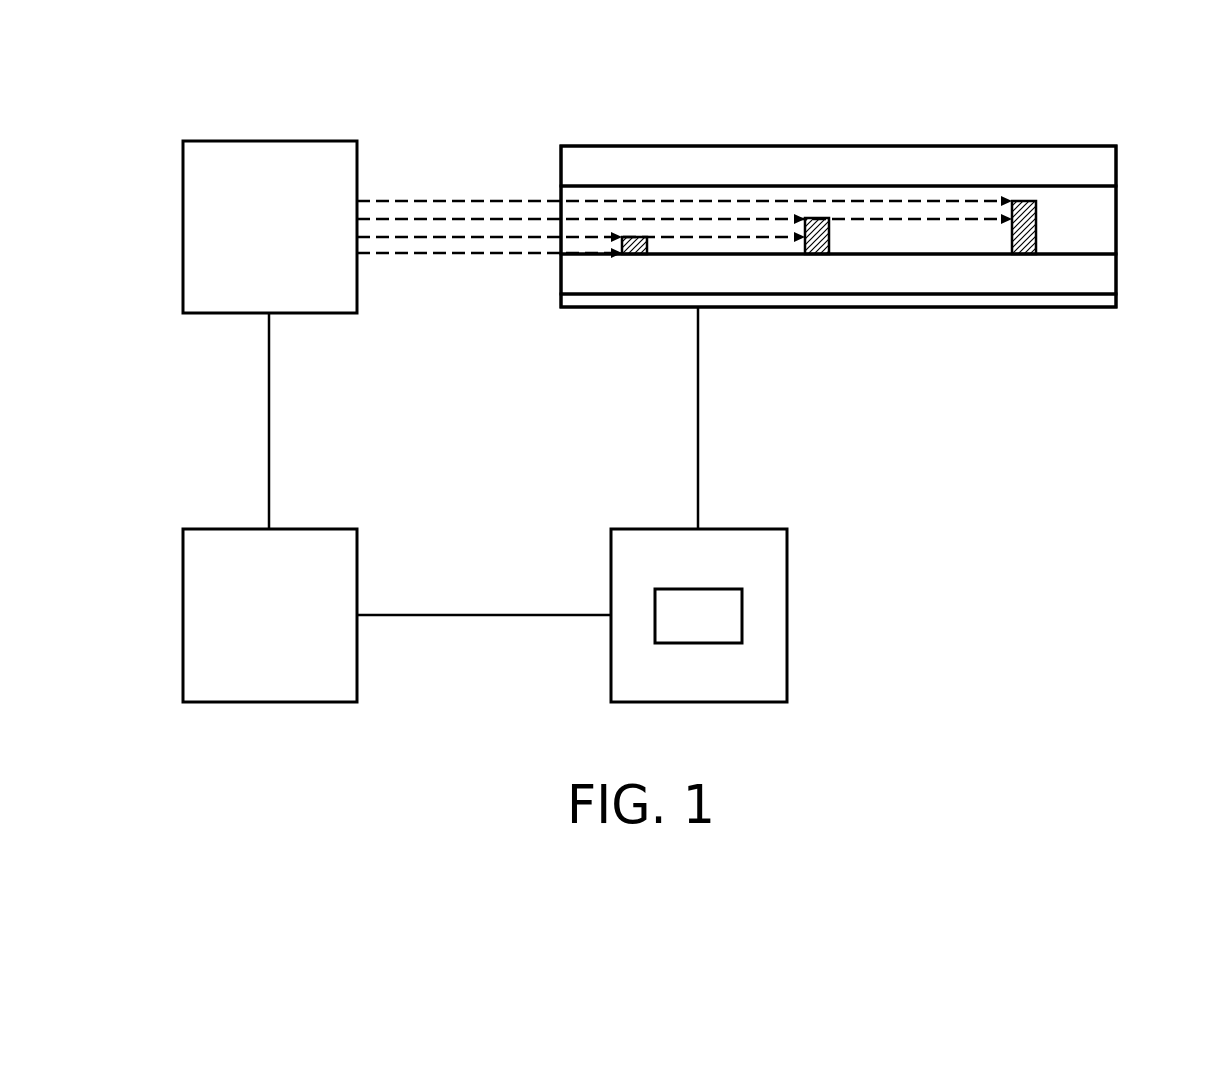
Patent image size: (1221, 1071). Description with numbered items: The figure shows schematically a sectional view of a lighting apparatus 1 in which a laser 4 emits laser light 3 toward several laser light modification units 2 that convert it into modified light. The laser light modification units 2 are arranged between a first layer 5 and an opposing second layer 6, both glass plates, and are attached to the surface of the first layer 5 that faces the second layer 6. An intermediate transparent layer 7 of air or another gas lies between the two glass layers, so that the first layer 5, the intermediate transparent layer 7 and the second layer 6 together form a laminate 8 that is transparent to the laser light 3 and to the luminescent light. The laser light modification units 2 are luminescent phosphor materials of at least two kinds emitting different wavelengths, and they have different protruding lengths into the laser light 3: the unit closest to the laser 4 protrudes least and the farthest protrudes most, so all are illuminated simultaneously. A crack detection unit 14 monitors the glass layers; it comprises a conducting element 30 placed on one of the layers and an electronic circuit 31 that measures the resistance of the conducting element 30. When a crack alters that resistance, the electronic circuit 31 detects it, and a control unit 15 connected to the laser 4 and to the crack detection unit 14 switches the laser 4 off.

The lighting apparatus 1 is at (692, 362).
The laser light modification units 2 is at (1036, 229).
The laser light 3 is at (441, 200).
The laser 4 is at (260, 243).
The first layer 5 is at (1116, 277).
The second layer 6 is at (1116, 167).
The intermediate transparent layer 7 is at (1116, 203).
The laminate 8 is at (881, 258).
The crack detection unit 14 is at (732, 615).
The control unit 15 is at (253, 630).
The conducting element 30 is at (931, 308).
The electronic circuit 31 is at (682, 630).